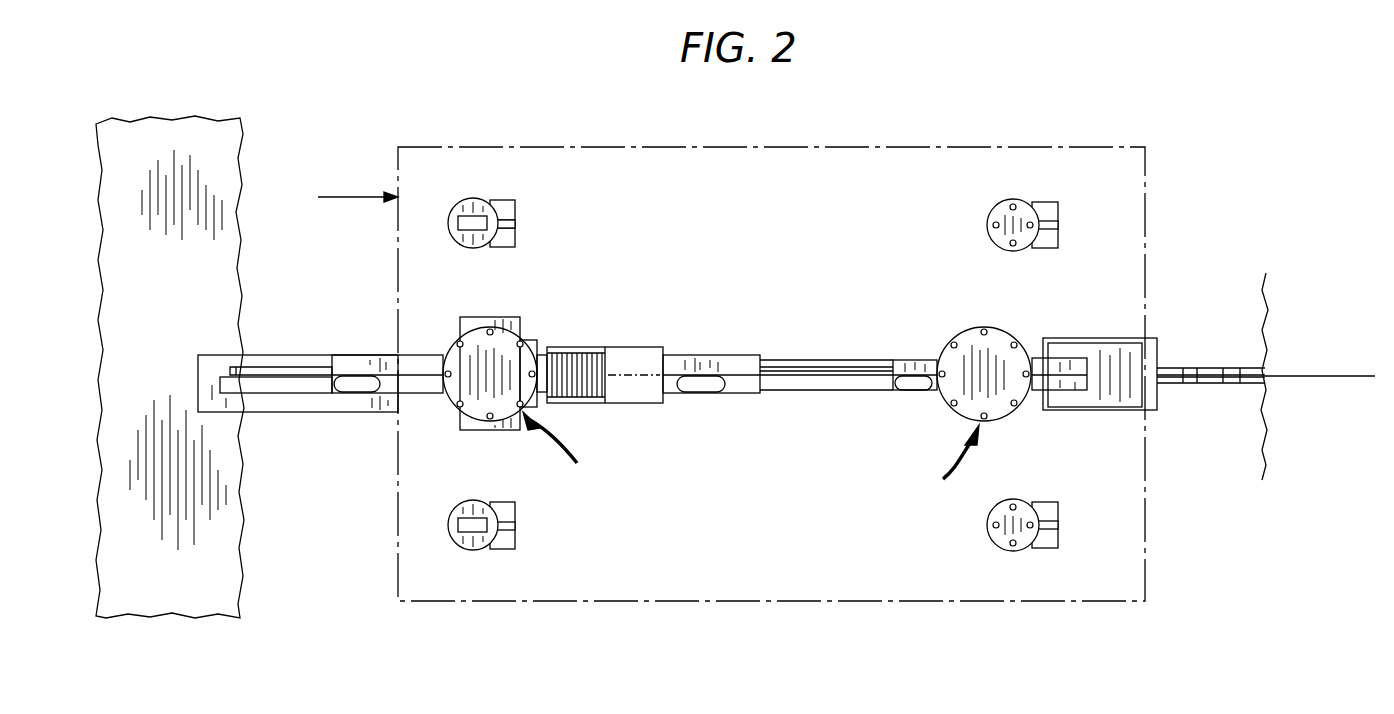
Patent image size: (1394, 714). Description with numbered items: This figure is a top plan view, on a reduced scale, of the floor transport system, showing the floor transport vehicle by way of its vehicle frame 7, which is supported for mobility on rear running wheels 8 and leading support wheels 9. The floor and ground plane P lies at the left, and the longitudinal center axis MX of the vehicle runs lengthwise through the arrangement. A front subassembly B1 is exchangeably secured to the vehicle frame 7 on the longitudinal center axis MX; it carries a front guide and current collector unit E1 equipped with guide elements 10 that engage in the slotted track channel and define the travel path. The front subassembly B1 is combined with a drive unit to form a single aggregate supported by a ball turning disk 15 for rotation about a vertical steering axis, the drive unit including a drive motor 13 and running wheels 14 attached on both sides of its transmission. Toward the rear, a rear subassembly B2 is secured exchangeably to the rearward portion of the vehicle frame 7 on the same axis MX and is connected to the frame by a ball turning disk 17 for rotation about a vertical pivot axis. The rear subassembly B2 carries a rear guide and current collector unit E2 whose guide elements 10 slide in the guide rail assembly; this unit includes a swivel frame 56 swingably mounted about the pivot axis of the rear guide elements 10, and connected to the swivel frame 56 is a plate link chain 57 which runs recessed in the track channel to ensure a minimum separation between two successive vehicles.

The vehicle frame 7 is at (897, 147).
The rear running wheels 8 is at (1052, 240).
The leading support wheels 9 is at (515, 215).
The guide elements 10 is at (700, 384).
The drive motor 13 is at (625, 360).
The running wheels 14 is at (520, 327).
The ball turning disk 15 is at (484, 380).
The ball turning disk 17 is at (1017, 403).
The swivel frame 56 is at (1085, 338).
The plate link chain 57 is at (1217, 368).
The front guide and current collector unit E1 is at (742, 355).
The rear guide and current collector unit E2 is at (912, 360).
The front subassembly B1 is at (566, 452).
The rear subassembly B2 is at (947, 469).
The floor and ground plane P is at (318, 586).
The longitudinal center axis MX is at (1318, 376).